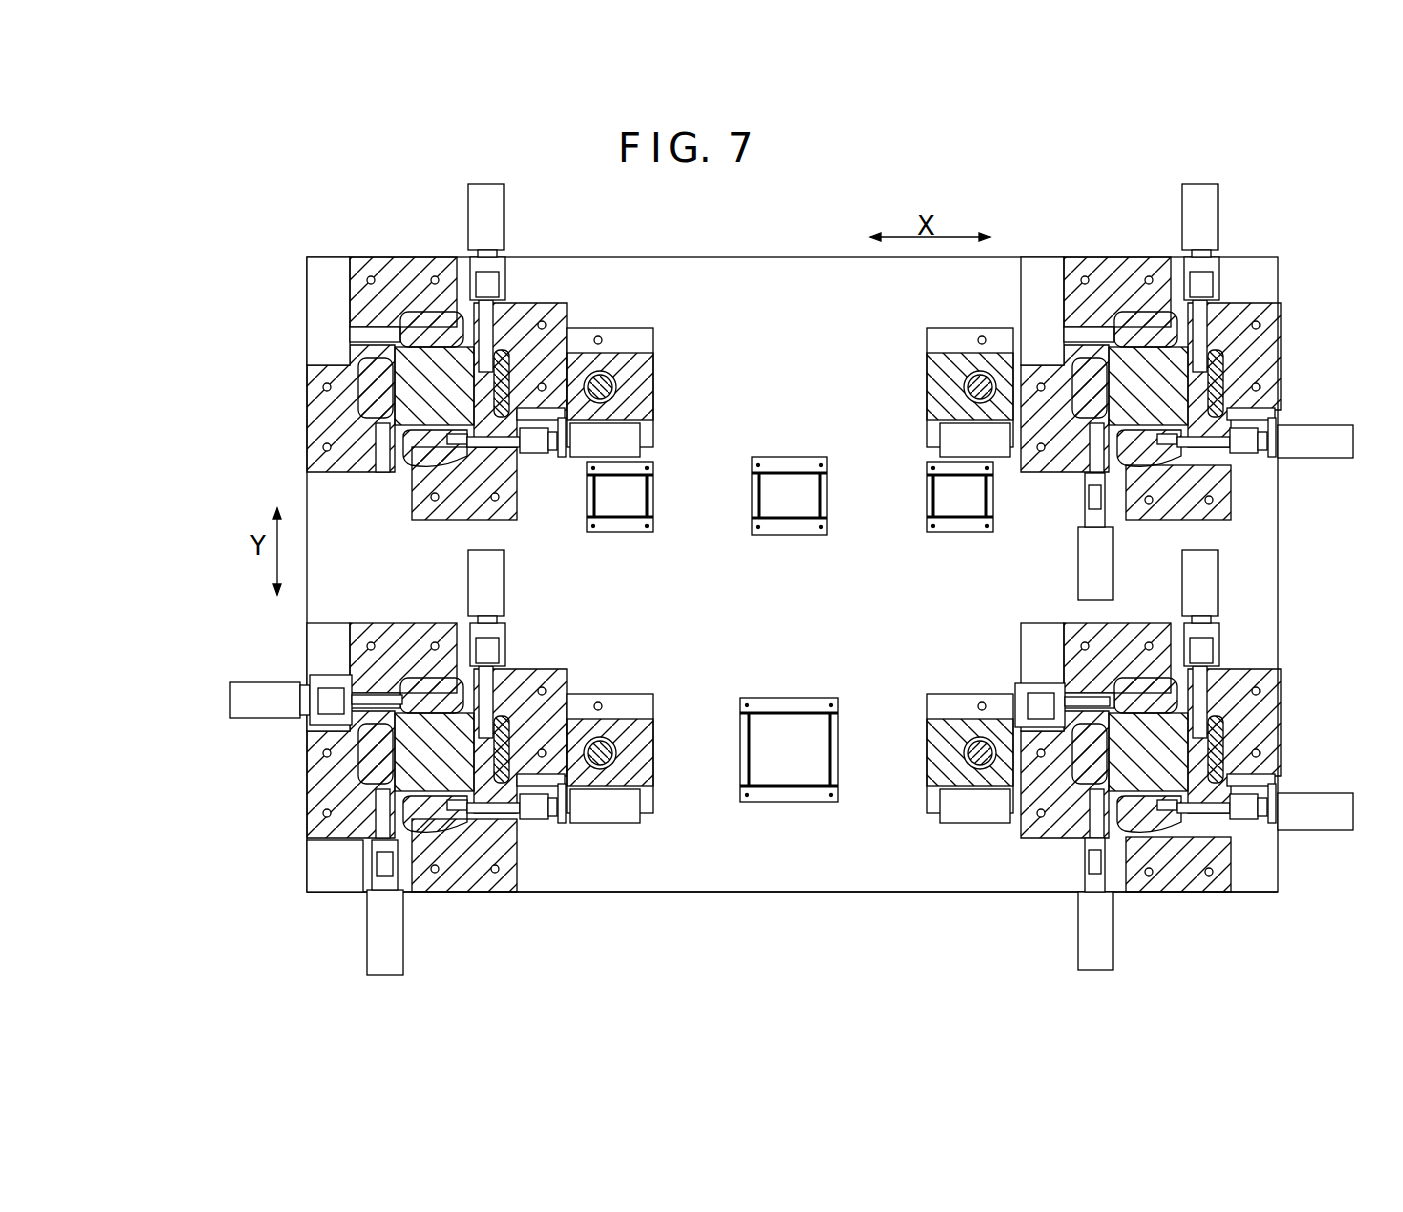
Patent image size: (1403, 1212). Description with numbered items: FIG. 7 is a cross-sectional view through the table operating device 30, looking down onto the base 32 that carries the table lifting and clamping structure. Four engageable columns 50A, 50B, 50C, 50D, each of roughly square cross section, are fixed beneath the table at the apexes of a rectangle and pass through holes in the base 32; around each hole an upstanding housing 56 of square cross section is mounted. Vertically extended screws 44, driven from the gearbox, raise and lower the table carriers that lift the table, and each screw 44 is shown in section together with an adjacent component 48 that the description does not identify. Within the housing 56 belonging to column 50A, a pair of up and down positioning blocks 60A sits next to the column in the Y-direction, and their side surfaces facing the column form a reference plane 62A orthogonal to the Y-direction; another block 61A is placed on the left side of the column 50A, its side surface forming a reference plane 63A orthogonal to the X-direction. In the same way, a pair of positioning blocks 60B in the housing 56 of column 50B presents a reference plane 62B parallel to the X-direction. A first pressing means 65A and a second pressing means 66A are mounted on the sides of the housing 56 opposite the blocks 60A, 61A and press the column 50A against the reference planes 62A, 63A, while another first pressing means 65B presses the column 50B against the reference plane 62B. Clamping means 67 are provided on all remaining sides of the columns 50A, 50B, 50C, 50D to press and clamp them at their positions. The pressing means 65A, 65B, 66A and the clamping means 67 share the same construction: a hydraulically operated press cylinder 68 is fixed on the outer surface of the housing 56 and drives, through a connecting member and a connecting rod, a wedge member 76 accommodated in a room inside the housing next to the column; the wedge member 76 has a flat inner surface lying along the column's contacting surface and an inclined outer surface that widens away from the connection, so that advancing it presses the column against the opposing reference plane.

The table operating device 30 is at (796, 226).
The base 32 is at (710, 893).
The screw 44 is at (645, 355).
The shaft 48 is at (638, 385).
The engageable column 50A is at (352, 345).
The engageable column 50B is at (1110, 348).
The engageable column 50C is at (378, 757).
The engageable column 50D is at (1190, 812).
The housing 56 is at (320, 440).
The up and down positioning block 60A is at (432, 352).
The up and down positioning block 60B is at (1150, 365).
The positioning block 61A is at (378, 390).
The reference plane 62A is at (412, 318).
The reference plane 62B is at (1118, 330).
The reference plane 63A is at (400, 437).
The first pressing means 65A is at (548, 466).
The first pressing means 65B is at (1250, 475).
The second pressing means 66A is at (514, 274).
The clamping means 67 is at (1232, 243).
The press cylinder 68 is at (490, 215).
The wedge member 76 is at (562, 333).